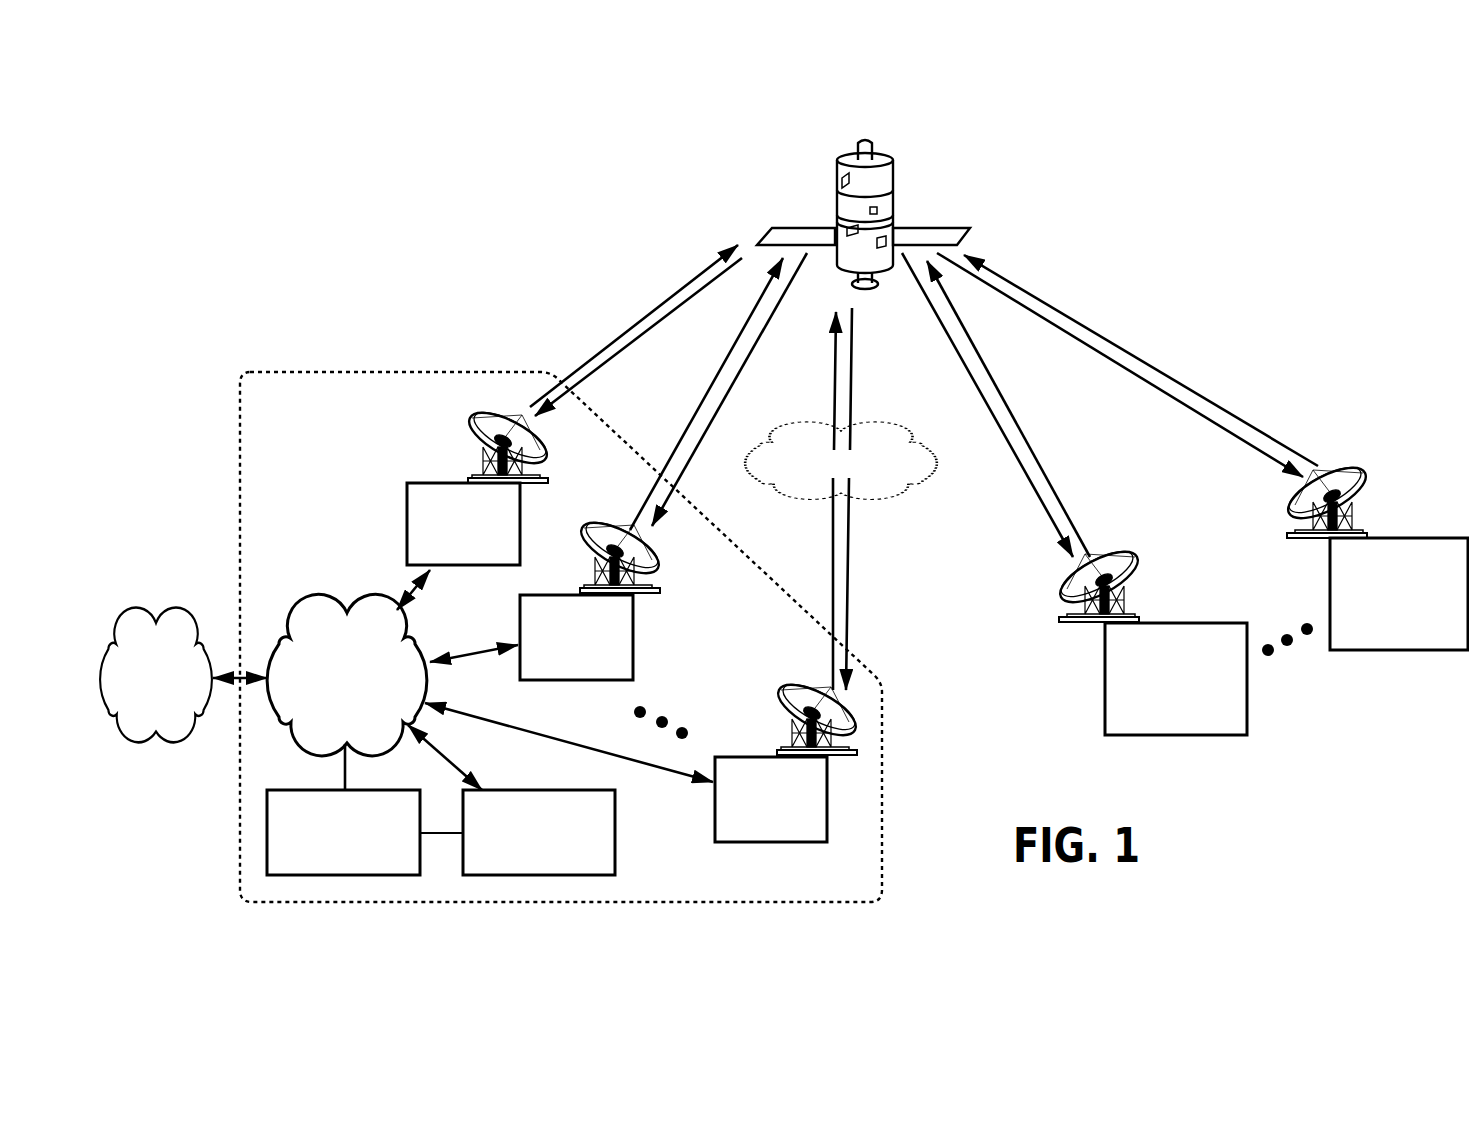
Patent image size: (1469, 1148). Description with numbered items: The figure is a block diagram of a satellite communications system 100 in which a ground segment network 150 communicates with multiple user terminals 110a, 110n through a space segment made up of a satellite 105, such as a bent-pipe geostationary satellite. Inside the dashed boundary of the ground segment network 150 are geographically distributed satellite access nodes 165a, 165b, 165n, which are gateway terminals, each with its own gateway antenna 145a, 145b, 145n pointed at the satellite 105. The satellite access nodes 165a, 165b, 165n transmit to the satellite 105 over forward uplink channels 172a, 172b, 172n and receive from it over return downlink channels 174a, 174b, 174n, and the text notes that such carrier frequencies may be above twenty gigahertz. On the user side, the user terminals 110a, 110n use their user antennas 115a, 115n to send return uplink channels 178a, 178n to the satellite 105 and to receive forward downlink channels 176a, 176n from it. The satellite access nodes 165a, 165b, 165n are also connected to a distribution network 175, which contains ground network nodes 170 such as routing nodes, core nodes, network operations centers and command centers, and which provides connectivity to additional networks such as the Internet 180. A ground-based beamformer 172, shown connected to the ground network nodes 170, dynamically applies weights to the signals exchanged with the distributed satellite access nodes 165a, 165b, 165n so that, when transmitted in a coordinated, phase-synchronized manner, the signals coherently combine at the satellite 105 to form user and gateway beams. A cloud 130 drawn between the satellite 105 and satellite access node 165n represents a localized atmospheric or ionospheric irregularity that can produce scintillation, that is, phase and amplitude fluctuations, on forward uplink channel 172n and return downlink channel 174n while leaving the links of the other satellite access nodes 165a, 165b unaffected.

The satellite communications system 100 is at (370, 168).
The satellite 105 is at (862, 142).
The user terminal 110a is at (1176, 679).
The user terminal 110n is at (1399, 594).
The user antenna 115a is at (1132, 562).
The user antenna 115n is at (1357, 478).
The cloud 130 is at (841, 461).
The gateway antenna 145a is at (478, 426).
The gateway antenna 145b is at (602, 530).
The gateway antenna 145n is at (782, 704).
The ground segment network 150 is at (561, 637).
The satellite access node 165a is at (463, 524).
The satellite access node 165b is at (576, 637).
The satellite access node 165n is at (771, 799).
The ground network nodes 170 is at (343, 832).
The ground-based beamformer 172 is at (539, 832).
The forward uplink channel 172a is at (648, 310).
The forward uplink channel 172b is at (698, 406).
The forward uplink channel 172n is at (828, 540).
The return downlink channel 174a is at (560, 372).
The return downlink channel 174b is at (765, 328).
The return downlink channel 174n is at (852, 588).
The distribution network 175 is at (347, 674).
The forward downlink channel 176a is at (960, 372).
The forward downlink channel 176n is at (1172, 390).
The return uplink channel 178a is at (1032, 444).
The return uplink channel 178n is at (1048, 306).
The Internet 180 is at (156, 675).